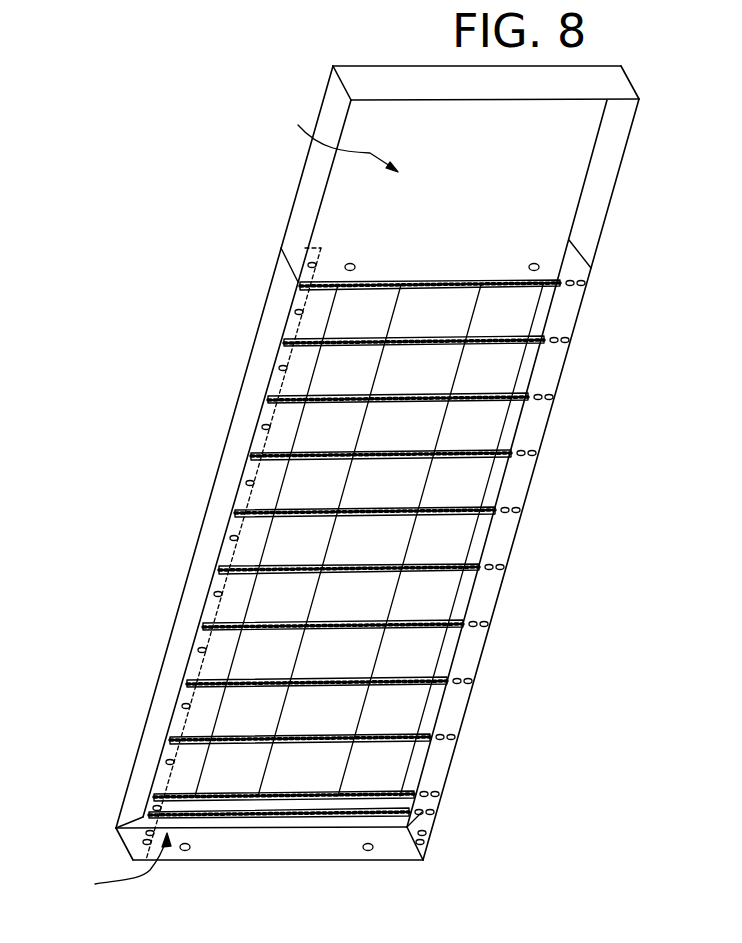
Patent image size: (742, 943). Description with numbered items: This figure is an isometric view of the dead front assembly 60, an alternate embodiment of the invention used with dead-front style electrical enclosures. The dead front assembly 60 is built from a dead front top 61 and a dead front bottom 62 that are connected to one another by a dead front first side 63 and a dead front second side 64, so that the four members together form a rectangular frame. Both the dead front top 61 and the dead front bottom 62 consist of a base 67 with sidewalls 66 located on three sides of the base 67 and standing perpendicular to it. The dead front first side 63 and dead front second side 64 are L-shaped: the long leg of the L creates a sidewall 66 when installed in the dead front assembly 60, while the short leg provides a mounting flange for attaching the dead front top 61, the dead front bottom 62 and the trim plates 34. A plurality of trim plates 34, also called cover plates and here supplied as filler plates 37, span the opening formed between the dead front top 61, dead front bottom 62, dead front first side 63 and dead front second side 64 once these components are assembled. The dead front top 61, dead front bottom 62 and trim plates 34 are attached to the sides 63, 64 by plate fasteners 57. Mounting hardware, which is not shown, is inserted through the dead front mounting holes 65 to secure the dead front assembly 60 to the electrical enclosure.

The dead front assembly 60 is at (128, 154).
The trim plates 34 is at (410, 423).
The filler plates 37 is at (383, 806).
The plate fasteners 57 is at (262, 433).
The dead front top 61 is at (338, 135).
The dead front bottom 62 is at (114, 868).
The dead front first side 63 is at (518, 472).
The dead front second side 64 is at (207, 547).
The dead front mounting holes 65 is at (348, 265).
The sidewalls 66 is at (613, 118).
The base 67 is at (503, 193).